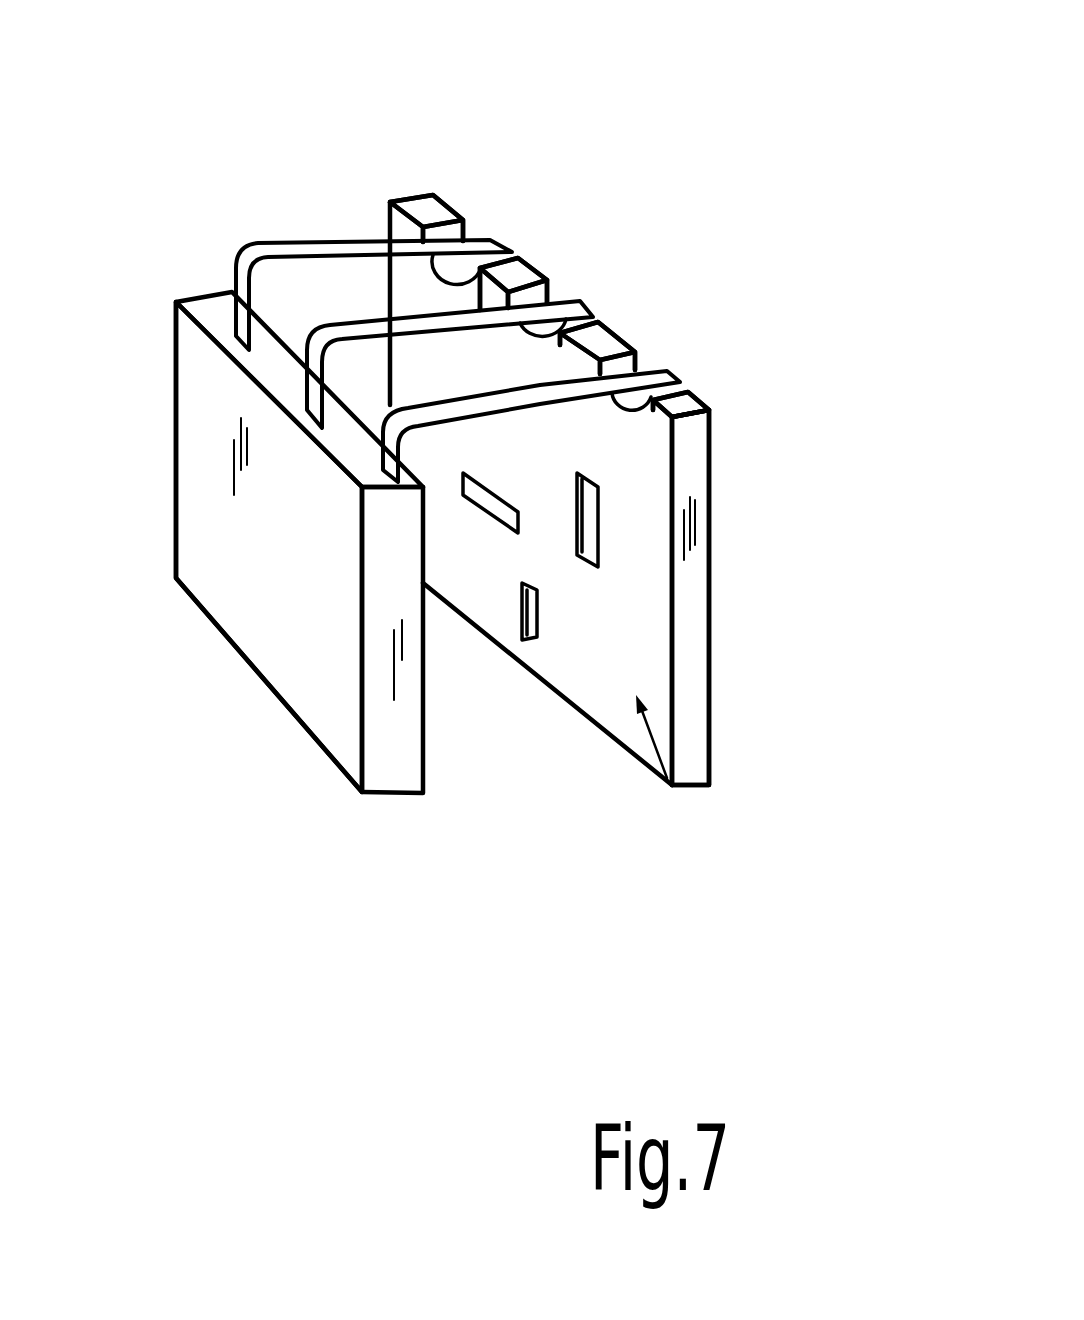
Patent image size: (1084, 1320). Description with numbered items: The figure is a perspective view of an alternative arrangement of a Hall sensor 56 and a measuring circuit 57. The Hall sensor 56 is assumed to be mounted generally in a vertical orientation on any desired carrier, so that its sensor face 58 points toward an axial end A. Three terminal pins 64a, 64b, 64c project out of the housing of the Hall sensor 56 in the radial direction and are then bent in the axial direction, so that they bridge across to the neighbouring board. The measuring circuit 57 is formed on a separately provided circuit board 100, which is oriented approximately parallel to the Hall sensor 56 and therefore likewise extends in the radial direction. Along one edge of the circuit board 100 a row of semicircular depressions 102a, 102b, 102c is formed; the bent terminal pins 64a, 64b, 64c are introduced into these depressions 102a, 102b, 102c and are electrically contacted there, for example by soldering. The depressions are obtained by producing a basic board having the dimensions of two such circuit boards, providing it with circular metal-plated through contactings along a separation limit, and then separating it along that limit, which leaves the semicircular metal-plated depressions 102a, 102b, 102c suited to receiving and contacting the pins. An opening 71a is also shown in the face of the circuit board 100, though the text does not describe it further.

The Hall sensor 56 is at (318, 662).
The measuring circuit 57 is at (670, 785).
The sensor face 58 is at (246, 556).
The terminal pin 64a is at (313, 248).
The terminal pin 64b is at (328, 330).
The terminal pin 64c is at (660, 373).
The recess in second block 71a is at (533, 637).
The circuit board 100 is at (673, 615).
The semicircular depression 102a is at (465, 218).
The semicircular depression 102b is at (547, 287).
The semicircular depression 102c is at (632, 401).
The axial end A is at (118, 584).